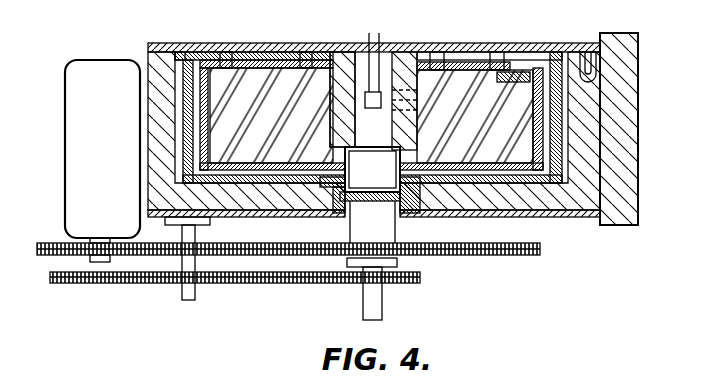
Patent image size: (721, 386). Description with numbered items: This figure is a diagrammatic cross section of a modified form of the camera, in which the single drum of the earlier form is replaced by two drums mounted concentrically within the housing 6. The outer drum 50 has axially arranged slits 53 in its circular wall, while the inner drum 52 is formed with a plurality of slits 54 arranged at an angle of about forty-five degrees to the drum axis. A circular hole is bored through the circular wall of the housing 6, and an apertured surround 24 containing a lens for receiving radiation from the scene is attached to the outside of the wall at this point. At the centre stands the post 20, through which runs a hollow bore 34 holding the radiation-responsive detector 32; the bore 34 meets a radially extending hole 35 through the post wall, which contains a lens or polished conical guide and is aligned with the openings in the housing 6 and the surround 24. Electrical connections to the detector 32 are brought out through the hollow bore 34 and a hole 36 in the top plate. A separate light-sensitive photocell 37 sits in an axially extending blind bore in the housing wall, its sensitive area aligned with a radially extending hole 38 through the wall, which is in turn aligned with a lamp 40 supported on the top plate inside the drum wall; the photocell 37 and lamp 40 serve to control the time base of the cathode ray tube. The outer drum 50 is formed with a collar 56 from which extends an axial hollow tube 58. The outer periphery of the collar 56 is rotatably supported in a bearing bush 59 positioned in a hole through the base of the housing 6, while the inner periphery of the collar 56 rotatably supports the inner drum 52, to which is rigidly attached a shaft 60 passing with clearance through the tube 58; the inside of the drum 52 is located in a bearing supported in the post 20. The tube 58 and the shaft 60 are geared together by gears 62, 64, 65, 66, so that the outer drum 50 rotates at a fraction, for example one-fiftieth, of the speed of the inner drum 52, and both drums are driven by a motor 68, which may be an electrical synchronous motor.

The housing 6 is at (262, 208).
The post 20 is at (338, 62).
The apertured surround 24 is at (633, 115).
The radiation-responsive detector 32 is at (333, 100).
The hollow bore 34 is at (390, 50).
The radially extending hole 35 is at (417, 100).
The hole 36 is at (367, 40).
The photocell 37 is at (589, 62).
The radially extending hole 38 is at (572, 70).
The lamp 40 is at (512, 73).
The outer drum 50 is at (187, 60).
The inner drum 52 is at (190, 116).
The slits 53 is at (228, 66).
The slits 54 is at (207, 86).
The collar 56 is at (343, 207).
The axial hollow tube 58 is at (380, 237).
The bearing bush 59 is at (473, 213).
The shaft 60 is at (377, 308).
The gear 62 is at (477, 259).
The gear 64 is at (196, 262).
The gear 65 is at (232, 275).
The gear 66 is at (357, 285).
The motor 68 is at (102, 60).